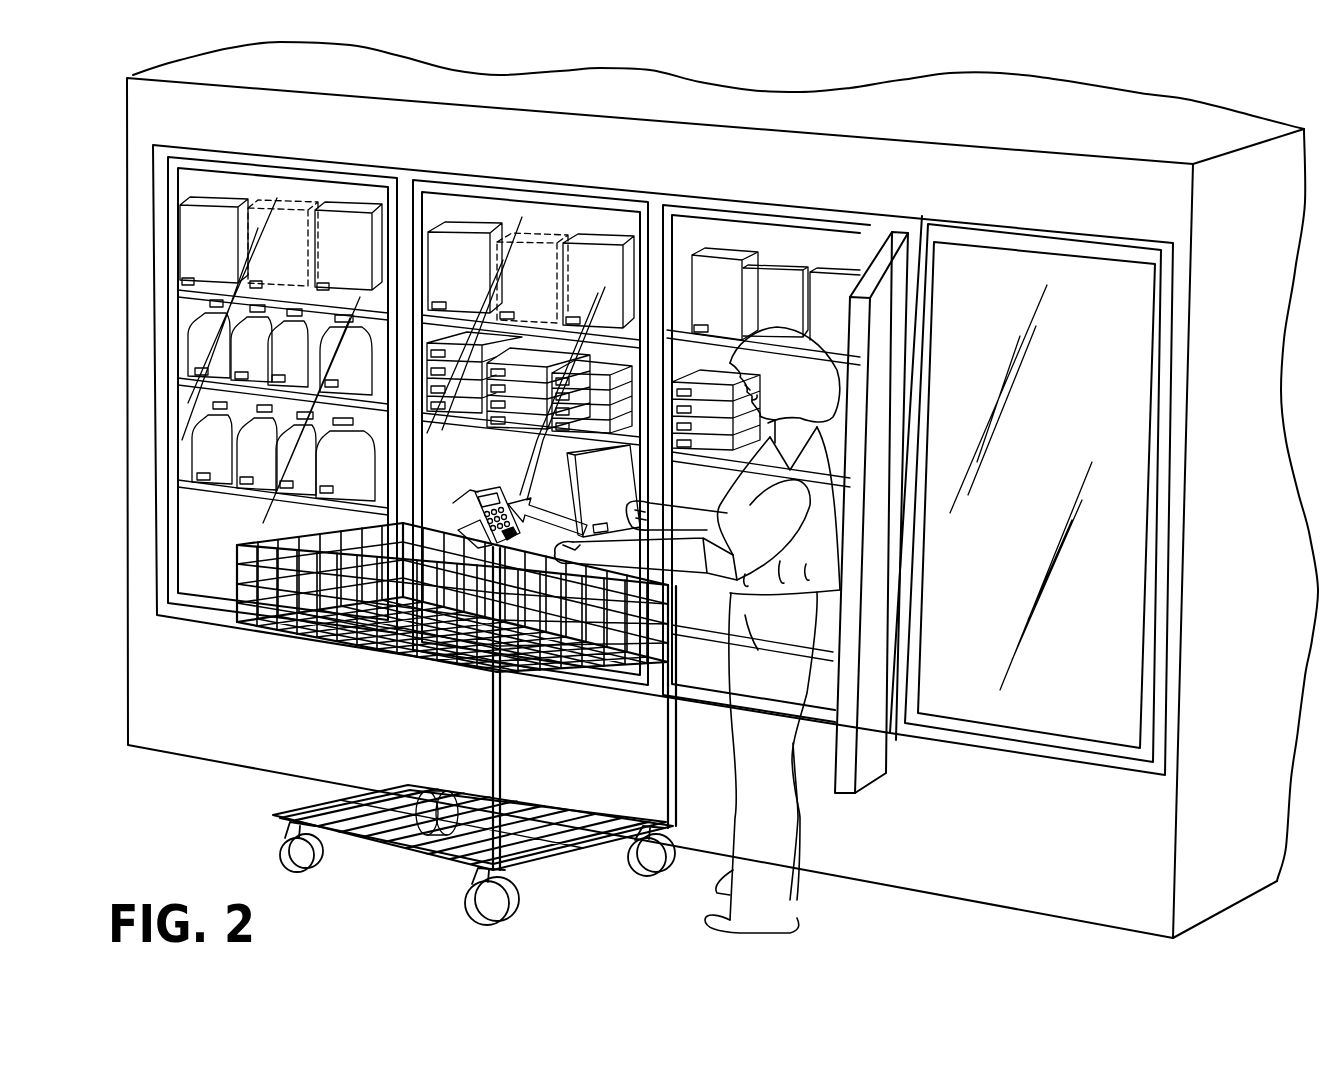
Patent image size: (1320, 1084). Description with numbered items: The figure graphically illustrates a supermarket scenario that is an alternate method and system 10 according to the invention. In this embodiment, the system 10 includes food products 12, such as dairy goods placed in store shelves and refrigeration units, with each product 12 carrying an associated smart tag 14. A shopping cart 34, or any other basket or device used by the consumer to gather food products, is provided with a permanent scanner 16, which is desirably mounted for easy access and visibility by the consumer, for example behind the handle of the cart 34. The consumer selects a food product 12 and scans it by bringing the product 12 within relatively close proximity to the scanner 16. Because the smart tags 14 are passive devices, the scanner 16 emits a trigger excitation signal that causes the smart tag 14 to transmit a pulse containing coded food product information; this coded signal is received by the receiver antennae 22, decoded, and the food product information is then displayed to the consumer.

The system 10 is at (598, 430).
The food product 12 is at (178, 453).
The smart tag 14 is at (206, 490).
The scanner 16 is at (473, 500).
The receiver antennae 22 is at (477, 470).
The shopping cart 34 is at (395, 645).